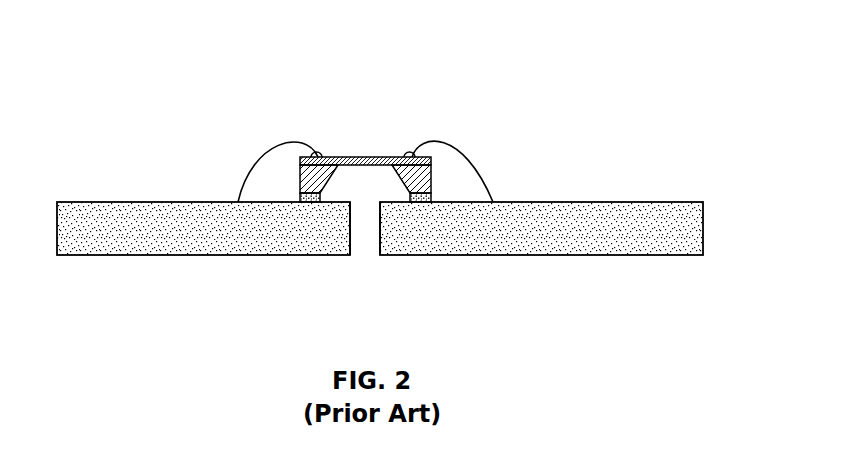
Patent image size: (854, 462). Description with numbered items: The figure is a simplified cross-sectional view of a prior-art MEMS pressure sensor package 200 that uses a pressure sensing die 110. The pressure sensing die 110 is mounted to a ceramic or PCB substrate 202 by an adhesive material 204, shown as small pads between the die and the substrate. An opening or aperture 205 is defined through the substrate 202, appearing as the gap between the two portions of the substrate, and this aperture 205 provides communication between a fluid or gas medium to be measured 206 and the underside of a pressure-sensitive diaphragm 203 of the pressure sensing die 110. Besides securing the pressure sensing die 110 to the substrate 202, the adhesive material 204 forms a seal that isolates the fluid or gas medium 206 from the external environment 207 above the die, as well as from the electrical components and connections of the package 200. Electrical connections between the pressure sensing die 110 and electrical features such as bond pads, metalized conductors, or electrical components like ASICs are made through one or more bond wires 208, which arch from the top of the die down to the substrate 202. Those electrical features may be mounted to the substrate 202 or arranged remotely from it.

The MEMS pressure sensor package 200 is at (163, 62).
The substrate 202 is at (680, 202).
The pressure-sensitive diaphragm 203 is at (352, 158).
The adhesive material 204 is at (297, 198).
The aperture 205 is at (366, 270).
The fluid or gas medium to be measured 206 is at (297, 296).
The external environment 207 is at (392, 135).
The bond wires 208 is at (452, 141).
The pressure sensing die 110 is at (374, 157).